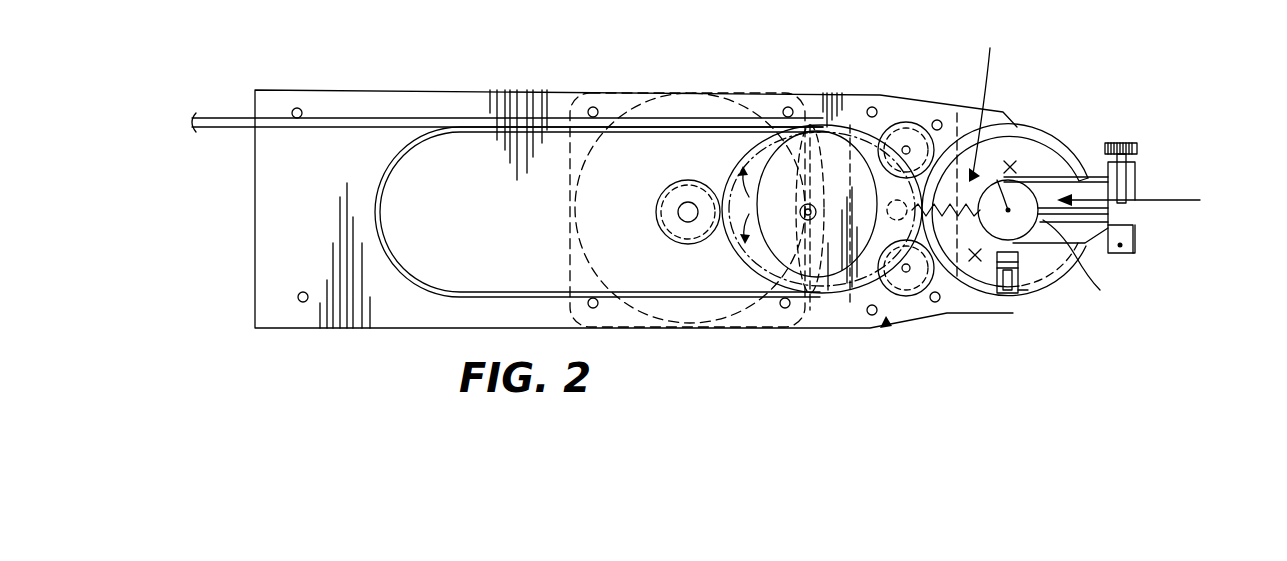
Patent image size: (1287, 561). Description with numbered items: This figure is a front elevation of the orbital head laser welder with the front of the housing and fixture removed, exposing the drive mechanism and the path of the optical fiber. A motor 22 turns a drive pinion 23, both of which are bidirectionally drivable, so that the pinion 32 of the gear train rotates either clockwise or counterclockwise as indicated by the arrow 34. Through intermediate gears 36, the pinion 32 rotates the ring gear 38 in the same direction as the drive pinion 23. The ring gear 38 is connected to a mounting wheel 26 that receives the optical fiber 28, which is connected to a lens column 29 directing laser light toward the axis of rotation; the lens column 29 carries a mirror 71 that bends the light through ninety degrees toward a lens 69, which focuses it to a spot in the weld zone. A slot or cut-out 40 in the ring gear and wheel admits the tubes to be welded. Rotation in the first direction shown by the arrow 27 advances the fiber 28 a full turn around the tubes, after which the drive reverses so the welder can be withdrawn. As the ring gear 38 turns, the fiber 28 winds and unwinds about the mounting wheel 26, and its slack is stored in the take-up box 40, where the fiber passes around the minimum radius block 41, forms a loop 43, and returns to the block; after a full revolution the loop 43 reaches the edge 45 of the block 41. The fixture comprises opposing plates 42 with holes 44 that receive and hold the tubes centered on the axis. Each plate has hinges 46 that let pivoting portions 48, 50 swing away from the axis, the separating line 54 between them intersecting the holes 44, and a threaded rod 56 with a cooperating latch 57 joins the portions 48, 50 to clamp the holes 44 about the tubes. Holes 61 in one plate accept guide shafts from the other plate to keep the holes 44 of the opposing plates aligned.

The motor 22 is at (673, 100).
The drive pinion 23 is at (660, 199).
The mounting wheel 26 is at (1032, 160).
The arrow 27 is at (992, 137).
The optical fiber 28 is at (330, 117).
The lens column 29 is at (1016, 272).
The pinion 32 is at (750, 262).
The arrow 34 is at (757, 250).
The intermediate gears 36 is at (904, 145).
The ring gear 38 is at (1013, 117).
The take-up box 40 is at (1126, 195).
The minimum radius block 41 is at (830, 250).
The fixture plates 42 is at (887, 325).
The loop 43 is at (380, 193).
The holes 44 is at (1080, 248).
The edge 45 is at (763, 167).
The hinges 46 is at (938, 120).
The pivoting portion 48 is at (1106, 168).
The pivoting portion 50 is at (1135, 238).
The line 54 is at (1100, 290).
The threaded rod 56 is at (1140, 148).
The latch 57 is at (1135, 225).
The holes 61 is at (872, 107).
The lens 69 is at (1030, 290).
The mirror 71 is at (1005, 282).